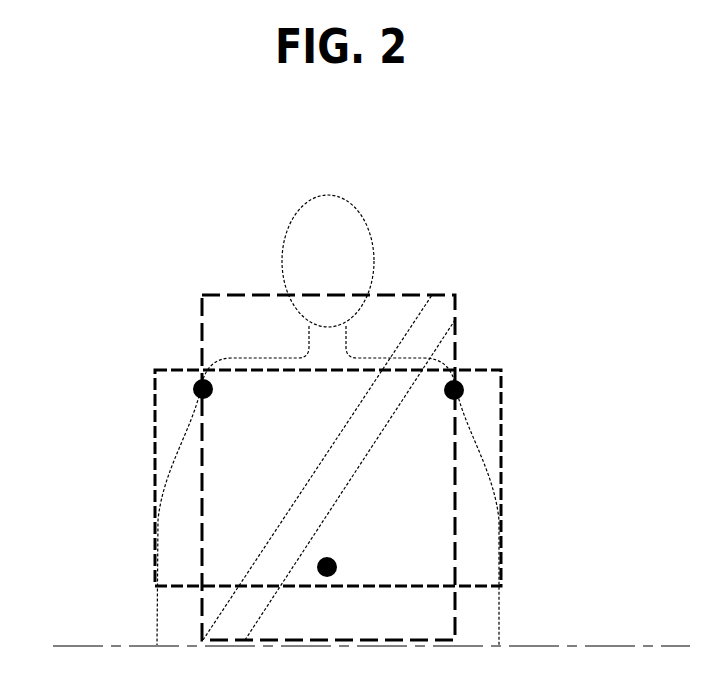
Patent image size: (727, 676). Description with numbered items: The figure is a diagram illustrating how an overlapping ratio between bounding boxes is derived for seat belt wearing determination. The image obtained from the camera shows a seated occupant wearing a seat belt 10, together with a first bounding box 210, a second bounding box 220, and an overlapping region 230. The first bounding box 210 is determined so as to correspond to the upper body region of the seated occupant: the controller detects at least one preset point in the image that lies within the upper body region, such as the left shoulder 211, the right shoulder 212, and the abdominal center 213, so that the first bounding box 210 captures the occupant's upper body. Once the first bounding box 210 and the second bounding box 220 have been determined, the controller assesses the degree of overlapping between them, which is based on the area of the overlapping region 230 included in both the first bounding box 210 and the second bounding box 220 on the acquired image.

The seat belt 10 is at (316, 503).
The first bounding box 210 is at (503, 450).
The left shoulder 211 is at (464, 386).
The right shoulder 212 is at (193, 388).
The abdominal center 213 is at (337, 567).
The second bounding box 220 is at (456, 307).
The overlapping region 230 is at (415, 503).